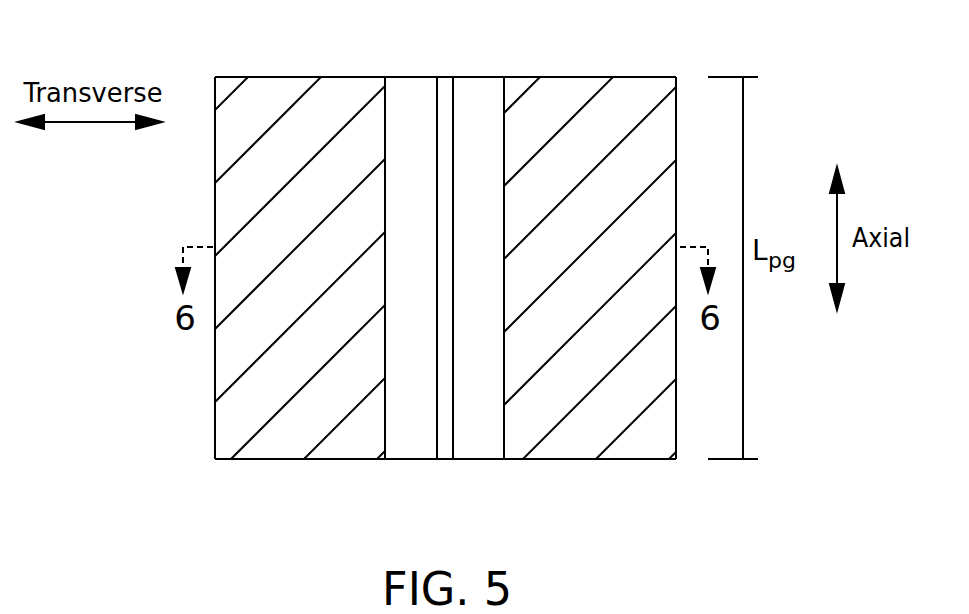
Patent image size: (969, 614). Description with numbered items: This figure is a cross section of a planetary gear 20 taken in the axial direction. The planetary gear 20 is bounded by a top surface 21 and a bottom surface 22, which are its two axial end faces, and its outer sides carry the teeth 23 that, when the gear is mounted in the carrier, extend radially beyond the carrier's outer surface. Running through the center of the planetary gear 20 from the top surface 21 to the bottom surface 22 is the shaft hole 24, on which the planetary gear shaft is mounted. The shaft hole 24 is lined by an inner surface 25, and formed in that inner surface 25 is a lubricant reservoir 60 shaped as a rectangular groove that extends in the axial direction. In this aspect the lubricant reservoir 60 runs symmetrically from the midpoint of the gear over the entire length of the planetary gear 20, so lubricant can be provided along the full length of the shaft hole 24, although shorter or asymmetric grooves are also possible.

The planetary gear 20 is at (628, 92).
The top surface 21 is at (338, 77).
The bottom surface 22 is at (332, 459).
The teeth 23 is at (215, 162).
The shaft hole 24 is at (479, 450).
The inner surface 25 is at (405, 83).
The lubricant reservoir 60 is at (445, 100).